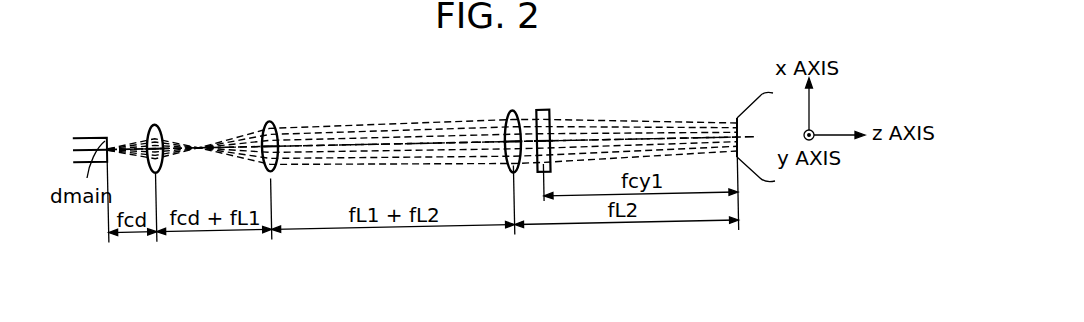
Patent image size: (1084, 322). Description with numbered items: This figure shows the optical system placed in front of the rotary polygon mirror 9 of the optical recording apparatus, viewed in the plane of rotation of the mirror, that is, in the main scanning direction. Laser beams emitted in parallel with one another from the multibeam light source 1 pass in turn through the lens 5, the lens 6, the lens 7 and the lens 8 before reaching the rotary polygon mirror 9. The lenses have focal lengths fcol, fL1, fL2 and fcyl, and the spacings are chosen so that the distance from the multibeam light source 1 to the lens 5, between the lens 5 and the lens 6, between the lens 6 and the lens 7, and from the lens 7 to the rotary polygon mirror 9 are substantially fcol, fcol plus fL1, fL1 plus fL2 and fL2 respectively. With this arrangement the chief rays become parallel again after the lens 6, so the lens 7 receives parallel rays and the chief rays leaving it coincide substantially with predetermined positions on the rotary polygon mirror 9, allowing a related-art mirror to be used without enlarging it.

The multibeam light source 1 is at (93, 139).
The lens 5 is at (155, 124).
The lens 6 is at (269, 121).
The lens 7 is at (513, 108).
The lens 8 is at (543, 109).
The rotary polygon mirror 9 is at (757, 104).